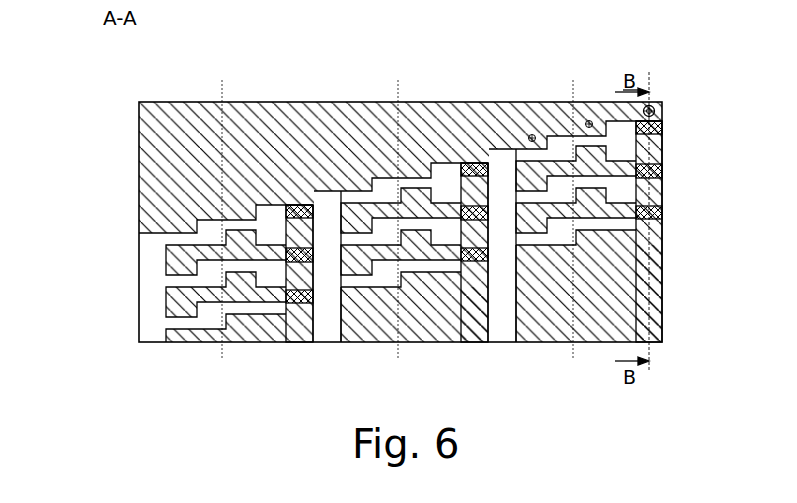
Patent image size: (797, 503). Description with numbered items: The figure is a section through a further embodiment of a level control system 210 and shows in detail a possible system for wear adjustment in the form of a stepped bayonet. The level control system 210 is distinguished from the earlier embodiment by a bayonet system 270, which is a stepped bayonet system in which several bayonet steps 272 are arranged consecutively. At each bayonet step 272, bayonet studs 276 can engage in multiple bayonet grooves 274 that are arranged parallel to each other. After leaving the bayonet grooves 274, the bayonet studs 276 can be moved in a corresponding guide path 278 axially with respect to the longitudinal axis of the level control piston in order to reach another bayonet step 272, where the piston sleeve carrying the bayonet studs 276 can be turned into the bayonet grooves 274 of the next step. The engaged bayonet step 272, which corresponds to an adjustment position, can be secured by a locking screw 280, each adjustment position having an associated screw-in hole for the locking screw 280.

The level control system 210 is at (118, 84).
The bayonet system 270 is at (139, 268).
The bayonet step 272 is at (626, 148).
The bayonet groove 274 is at (219, 196).
The bayonet stud 276 is at (312, 190).
The guide path 278 is at (327, 342).
The locking screw 280 is at (653, 106).